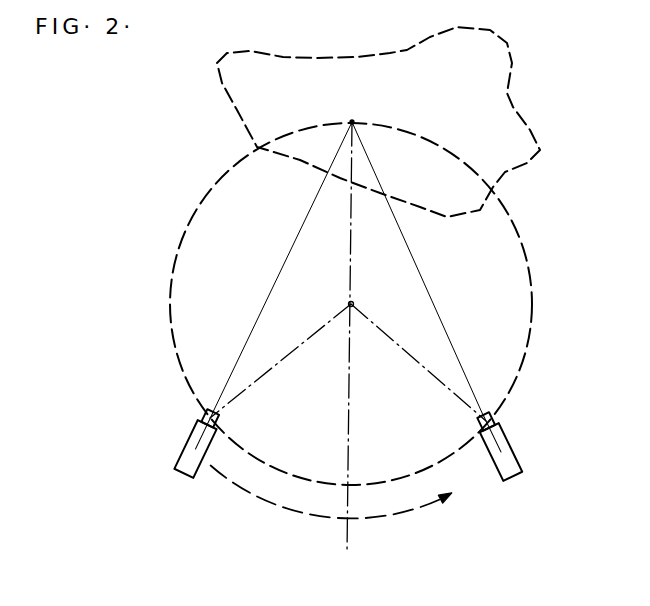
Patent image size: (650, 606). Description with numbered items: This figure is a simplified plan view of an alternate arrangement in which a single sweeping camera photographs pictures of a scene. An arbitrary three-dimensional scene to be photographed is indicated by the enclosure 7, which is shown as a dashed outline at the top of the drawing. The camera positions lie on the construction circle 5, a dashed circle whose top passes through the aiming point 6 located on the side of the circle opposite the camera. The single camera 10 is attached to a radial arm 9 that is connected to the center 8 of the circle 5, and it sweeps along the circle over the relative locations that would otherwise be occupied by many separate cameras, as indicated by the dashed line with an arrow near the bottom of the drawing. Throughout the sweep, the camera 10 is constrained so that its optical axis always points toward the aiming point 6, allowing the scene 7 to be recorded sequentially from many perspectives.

The construction circle 5 is at (531, 262).
The aiming point 6 is at (352, 122).
The enclosure 7 is at (507, 97).
The center of rotation 8 is at (354, 301).
The radial arm 9 is at (305, 340).
The single camera 10 is at (183, 437).